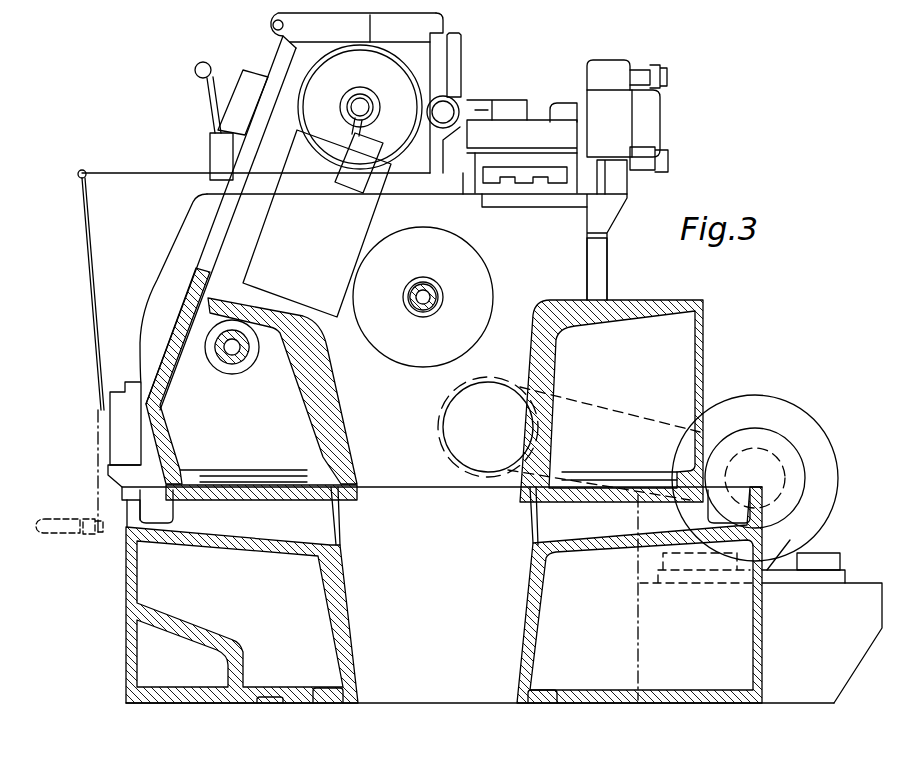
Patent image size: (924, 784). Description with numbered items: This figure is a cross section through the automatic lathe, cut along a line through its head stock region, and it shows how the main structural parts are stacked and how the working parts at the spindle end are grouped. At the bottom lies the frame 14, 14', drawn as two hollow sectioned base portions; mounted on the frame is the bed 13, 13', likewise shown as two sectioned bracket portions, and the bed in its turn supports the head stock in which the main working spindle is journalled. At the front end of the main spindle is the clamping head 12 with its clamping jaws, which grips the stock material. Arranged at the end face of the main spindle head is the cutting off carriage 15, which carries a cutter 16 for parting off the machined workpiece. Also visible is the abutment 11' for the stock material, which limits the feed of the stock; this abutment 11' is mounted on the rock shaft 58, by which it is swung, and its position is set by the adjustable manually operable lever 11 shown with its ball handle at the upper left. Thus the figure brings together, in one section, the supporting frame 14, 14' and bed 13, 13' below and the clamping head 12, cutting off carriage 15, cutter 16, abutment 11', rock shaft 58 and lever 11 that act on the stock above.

The manually operable lever 11 is at (201, 121).
The clamping head 12 is at (317, 93).
The cutter 16 is at (353, 126).
The cutting off carriage 15 is at (270, 240).
The abutment 11' is at (472, 65).
The rock shaft 58 is at (455, 108).
The bed 13' is at (259, 384).
The bed 13 is at (631, 370).
The frame 14' is at (258, 595).
The frame 14 is at (628, 595).